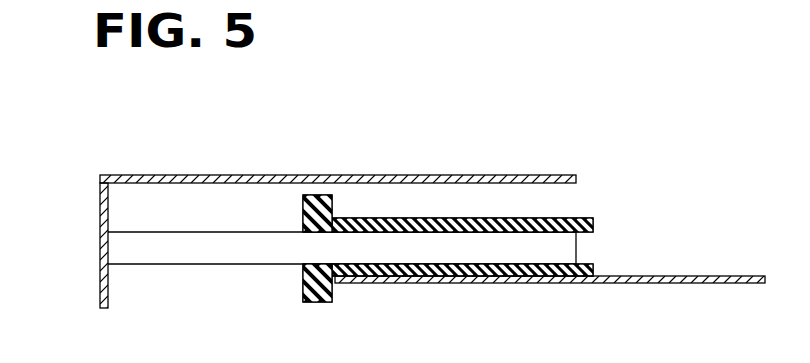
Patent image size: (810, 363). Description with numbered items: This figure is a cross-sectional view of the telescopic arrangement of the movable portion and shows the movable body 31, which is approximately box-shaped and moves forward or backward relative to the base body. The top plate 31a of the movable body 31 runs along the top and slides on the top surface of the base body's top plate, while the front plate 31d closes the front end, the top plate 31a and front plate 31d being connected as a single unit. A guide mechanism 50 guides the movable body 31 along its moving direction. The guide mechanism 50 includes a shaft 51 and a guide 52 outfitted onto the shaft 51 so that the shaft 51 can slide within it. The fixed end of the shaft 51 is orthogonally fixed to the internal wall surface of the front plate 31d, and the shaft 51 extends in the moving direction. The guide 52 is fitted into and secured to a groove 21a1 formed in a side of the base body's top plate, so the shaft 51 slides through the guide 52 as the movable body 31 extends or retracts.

The movable body 31 is at (304, 209).
The top plate 31a is at (363, 175).
The front plate 31d is at (100, 226).
The shaft 51 is at (192, 264).
The guide 52 is at (576, 218).
The guide mechanism 50 is at (290, 277).
The groove 21a1 is at (655, 283).